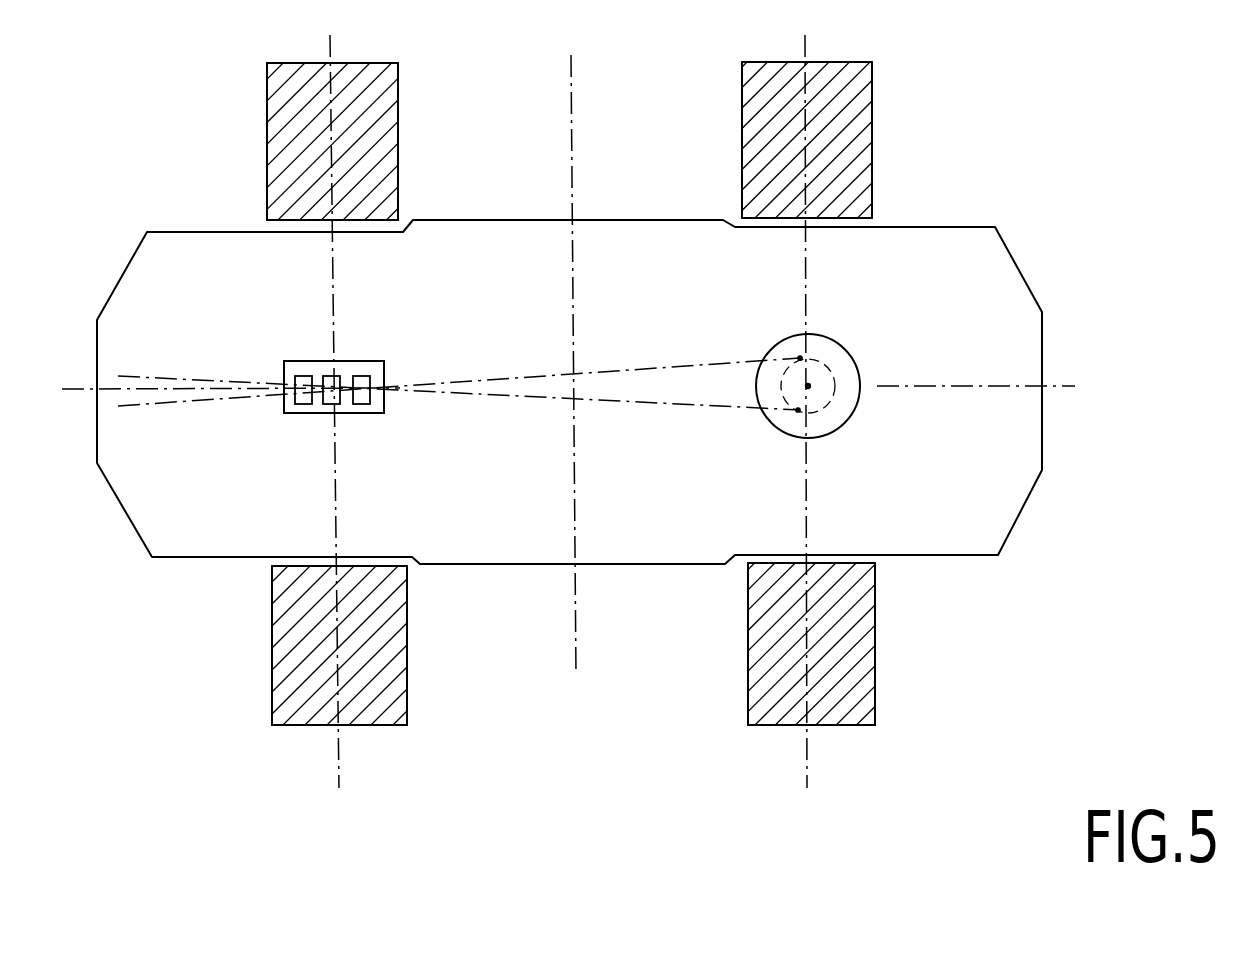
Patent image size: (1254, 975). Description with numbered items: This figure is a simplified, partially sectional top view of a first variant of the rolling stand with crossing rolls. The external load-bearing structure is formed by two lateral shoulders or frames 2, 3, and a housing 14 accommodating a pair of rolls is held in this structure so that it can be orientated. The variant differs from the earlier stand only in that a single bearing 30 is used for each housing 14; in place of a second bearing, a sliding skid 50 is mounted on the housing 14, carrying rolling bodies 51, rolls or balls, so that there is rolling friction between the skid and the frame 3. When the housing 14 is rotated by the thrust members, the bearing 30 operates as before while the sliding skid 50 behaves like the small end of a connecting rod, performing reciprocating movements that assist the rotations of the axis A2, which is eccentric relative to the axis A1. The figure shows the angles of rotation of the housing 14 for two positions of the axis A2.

The lateral shoulder or frame 2 is at (856, 80).
The lateral shoulder or frame 3 is at (375, 105).
The housing 14 is at (1020, 309).
The bearing 30 is at (851, 410).
The sliding skid 50 is at (300, 361).
The rolling bodies 51 is at (362, 404).
The axis A1 is at (815, 381).
The axis A2 is at (800, 358).